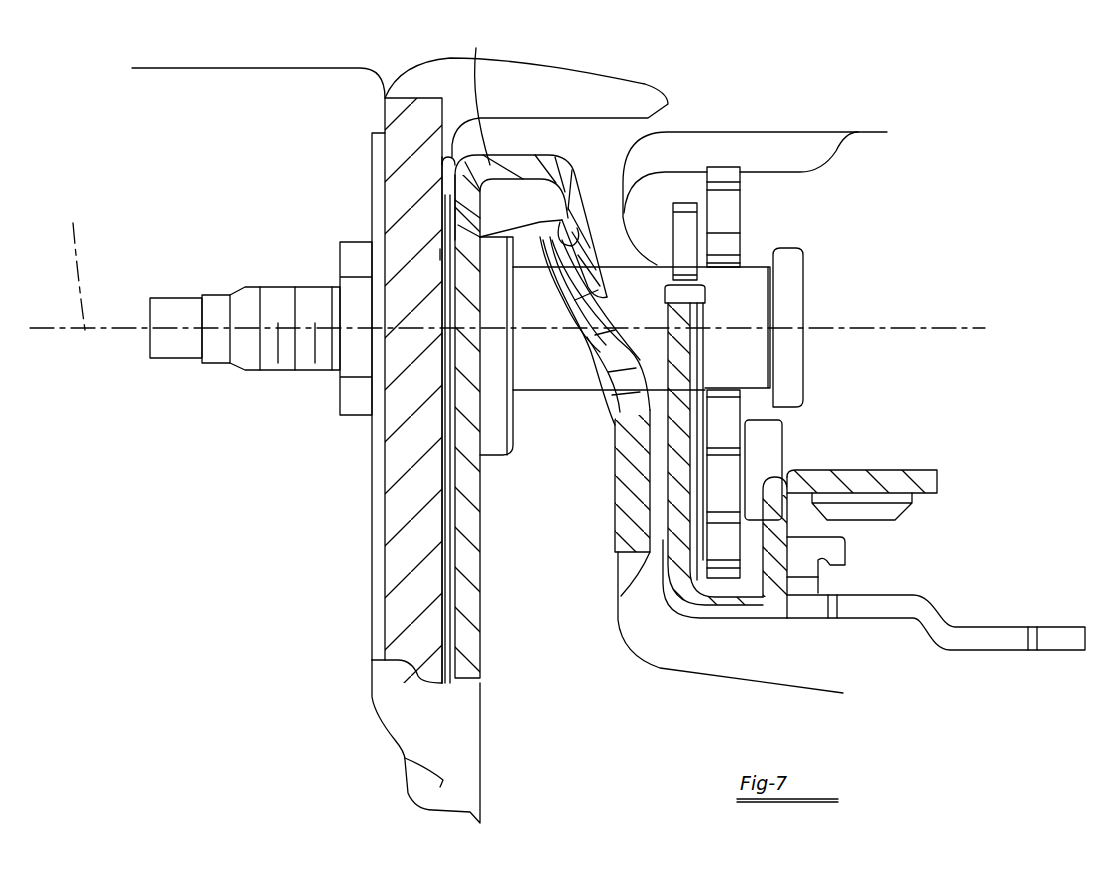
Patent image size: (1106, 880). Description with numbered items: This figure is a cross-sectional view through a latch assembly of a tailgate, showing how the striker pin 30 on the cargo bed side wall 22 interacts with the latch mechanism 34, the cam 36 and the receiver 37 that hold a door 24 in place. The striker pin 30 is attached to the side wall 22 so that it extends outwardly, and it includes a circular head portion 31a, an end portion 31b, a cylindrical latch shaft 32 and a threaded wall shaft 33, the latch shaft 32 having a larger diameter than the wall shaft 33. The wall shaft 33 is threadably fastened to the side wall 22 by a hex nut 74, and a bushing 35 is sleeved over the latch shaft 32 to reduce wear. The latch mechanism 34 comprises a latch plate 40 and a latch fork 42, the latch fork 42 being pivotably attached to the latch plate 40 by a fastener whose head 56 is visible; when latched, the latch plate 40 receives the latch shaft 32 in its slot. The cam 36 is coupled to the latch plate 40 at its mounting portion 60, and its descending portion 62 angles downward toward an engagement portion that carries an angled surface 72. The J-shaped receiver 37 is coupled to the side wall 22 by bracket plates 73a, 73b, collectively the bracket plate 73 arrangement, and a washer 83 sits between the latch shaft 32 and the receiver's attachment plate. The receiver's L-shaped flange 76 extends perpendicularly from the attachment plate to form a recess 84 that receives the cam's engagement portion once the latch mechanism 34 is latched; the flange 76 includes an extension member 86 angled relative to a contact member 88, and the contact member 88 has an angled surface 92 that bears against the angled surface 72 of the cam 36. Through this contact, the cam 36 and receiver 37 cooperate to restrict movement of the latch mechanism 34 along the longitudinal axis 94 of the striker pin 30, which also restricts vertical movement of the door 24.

The side wall 22 is at (398, 708).
The door 24 is at (667, 657).
The striker pin 30 is at (244, 342).
The head portion 31a is at (793, 295).
The end portion 31b is at (170, 298).
The latch shaft 32 is at (773, 283).
The wall shaft 33 is at (262, 298).
The latch mechanism 34 is at (905, 452).
The bushing 35 is at (757, 358).
The cam 36 is at (612, 558).
The receiver 37 is at (490, 675).
The latch plate 40 is at (791, 632).
The latch fork 42 is at (727, 155).
The head 56 is at (767, 450).
The mounting portion 60 is at (607, 470).
The descending portion 62 is at (600, 393).
The angled surface 72 is at (585, 252).
The bracket plate 73 is at (490, 600).
The bracket plate 73a is at (442, 155).
The bracket plate 73b is at (440, 249).
The hex nut 74 is at (352, 397).
The flange 76 is at (538, 145).
The washer 83 is at (497, 455).
The recess 84 is at (533, 267).
The extension member 86 is at (476, 93).
The contact member 88 is at (668, 302).
The angled surface 92 is at (568, 216).
The longitudinal axis 94 is at (57, 262).